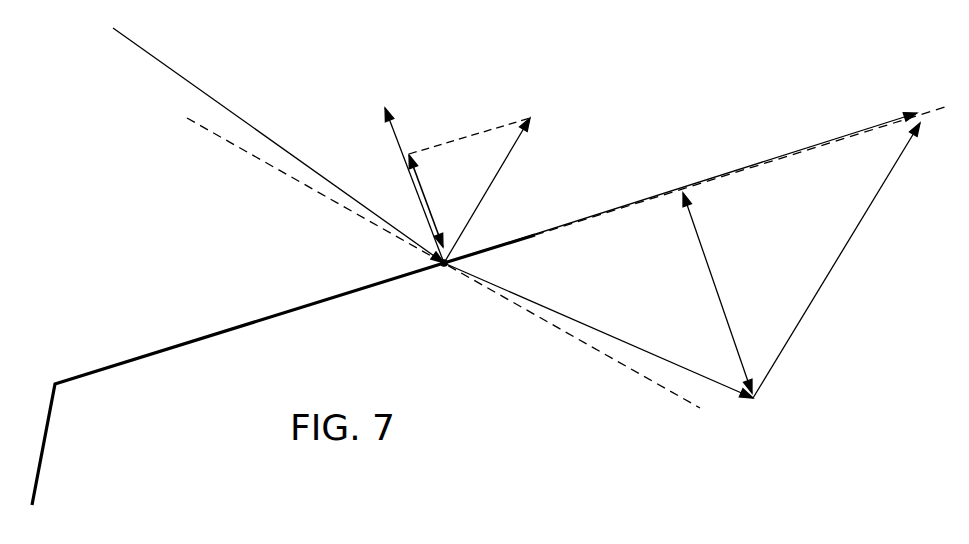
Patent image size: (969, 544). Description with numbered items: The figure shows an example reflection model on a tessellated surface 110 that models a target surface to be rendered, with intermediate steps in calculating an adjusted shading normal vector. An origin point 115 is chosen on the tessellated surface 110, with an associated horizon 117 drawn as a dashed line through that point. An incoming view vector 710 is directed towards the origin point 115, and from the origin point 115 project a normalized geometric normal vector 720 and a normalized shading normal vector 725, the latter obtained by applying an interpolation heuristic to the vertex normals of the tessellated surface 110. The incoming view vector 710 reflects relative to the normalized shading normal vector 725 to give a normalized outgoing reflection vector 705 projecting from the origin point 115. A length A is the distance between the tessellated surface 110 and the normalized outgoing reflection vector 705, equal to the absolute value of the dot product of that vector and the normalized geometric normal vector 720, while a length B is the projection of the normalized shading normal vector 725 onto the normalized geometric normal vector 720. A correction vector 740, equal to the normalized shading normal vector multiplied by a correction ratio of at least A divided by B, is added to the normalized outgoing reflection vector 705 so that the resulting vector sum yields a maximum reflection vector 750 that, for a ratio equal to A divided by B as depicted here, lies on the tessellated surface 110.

The tessellated surface 110 is at (168, 345).
The origin point 115 is at (446, 276).
The horizon 117 is at (300, 183).
The incoming view vector 710 is at (213, 98).
The normalized geometric normal vector 720 is at (392, 137).
The normalized shading normal vector 725 is at (500, 175).
The maximum reflection vector 750 is at (742, 160).
The normalized outgoing reflection vector 705 is at (620, 340).
The correction vector 740 is at (842, 262).
The length A is at (717, 293).
The length B is at (426, 201).